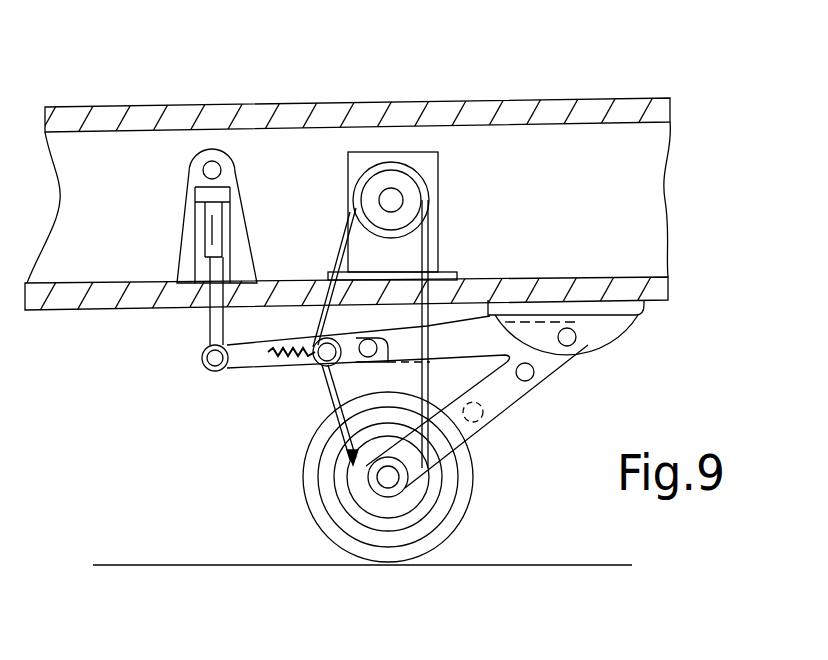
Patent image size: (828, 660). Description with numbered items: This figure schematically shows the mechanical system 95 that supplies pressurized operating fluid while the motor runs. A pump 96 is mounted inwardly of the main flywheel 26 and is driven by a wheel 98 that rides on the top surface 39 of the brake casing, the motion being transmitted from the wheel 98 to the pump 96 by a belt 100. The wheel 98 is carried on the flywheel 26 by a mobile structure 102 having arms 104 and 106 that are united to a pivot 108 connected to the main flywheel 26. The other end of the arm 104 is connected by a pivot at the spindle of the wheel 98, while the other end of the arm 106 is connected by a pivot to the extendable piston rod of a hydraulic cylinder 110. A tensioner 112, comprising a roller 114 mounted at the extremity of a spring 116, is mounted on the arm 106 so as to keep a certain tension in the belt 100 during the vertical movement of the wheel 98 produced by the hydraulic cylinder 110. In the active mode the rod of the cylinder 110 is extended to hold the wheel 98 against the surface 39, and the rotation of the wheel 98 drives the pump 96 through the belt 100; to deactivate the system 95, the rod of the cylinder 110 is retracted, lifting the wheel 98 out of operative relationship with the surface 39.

The main flywheel 26 is at (317, 106).
The mechanical system 95 is at (405, 135).
The pump 96 is at (433, 165).
The belt 100 is at (423, 250).
The hydraulic cylinder 110 is at (187, 208).
The tensioner 112 is at (298, 333).
The arm 106 is at (230, 369).
The spring 116 is at (292, 363).
The roller 114 is at (332, 378).
The pivot 108 is at (578, 337).
The mobile structure 102 is at (535, 375).
The arm 104 is at (503, 408).
The wheel 98 is at (473, 490).
The top surface 39 is at (180, 565).